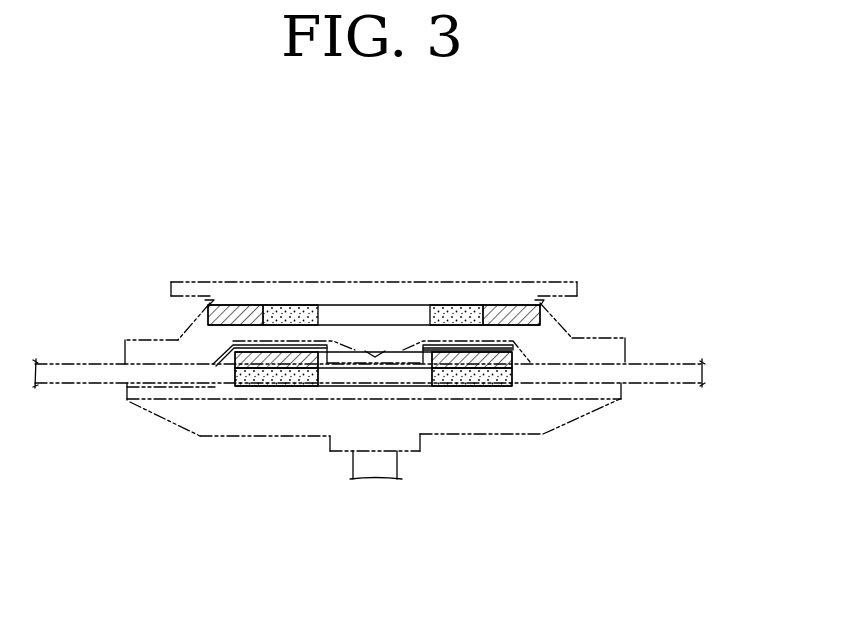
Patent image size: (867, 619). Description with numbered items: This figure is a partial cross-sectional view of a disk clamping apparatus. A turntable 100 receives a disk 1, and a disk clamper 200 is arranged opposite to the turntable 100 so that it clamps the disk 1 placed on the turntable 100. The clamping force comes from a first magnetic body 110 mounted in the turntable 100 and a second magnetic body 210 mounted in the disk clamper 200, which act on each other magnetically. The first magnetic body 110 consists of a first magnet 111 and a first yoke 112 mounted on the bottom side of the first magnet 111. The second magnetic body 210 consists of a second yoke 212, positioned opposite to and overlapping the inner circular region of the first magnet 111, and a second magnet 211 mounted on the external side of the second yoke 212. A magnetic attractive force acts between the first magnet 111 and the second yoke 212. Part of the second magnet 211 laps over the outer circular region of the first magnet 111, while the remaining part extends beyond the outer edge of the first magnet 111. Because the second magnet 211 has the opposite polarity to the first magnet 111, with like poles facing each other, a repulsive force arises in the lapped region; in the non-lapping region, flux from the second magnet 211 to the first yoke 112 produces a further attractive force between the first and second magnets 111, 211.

The disk 1 is at (677, 363).
The turntable 100 is at (593, 412).
The first magnetic body 110 is at (438, 426).
The first magnet 111 is at (516, 370).
The first yoke 112 is at (511, 372).
The disk clamper 200 is at (576, 288).
The second magnetic body 210 is at (374, 261).
The second magnet 211 is at (510, 304).
The second yoke 212 is at (460, 304).